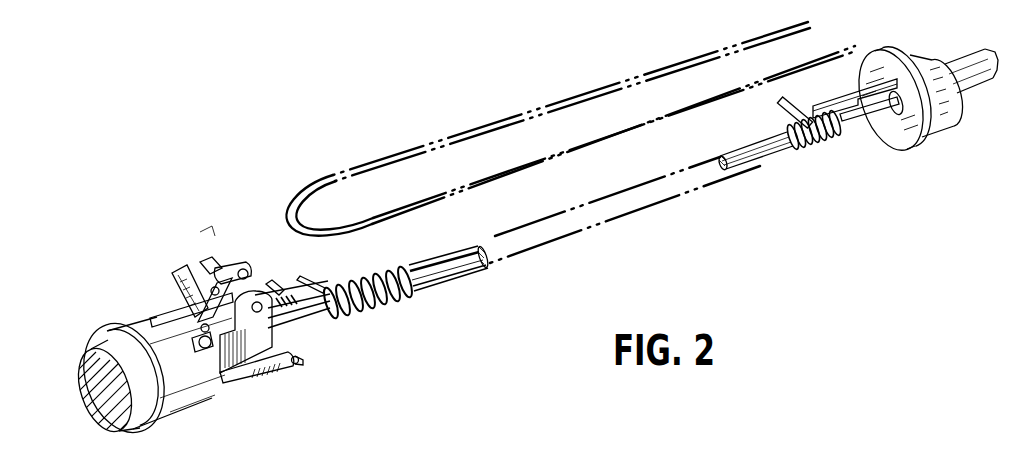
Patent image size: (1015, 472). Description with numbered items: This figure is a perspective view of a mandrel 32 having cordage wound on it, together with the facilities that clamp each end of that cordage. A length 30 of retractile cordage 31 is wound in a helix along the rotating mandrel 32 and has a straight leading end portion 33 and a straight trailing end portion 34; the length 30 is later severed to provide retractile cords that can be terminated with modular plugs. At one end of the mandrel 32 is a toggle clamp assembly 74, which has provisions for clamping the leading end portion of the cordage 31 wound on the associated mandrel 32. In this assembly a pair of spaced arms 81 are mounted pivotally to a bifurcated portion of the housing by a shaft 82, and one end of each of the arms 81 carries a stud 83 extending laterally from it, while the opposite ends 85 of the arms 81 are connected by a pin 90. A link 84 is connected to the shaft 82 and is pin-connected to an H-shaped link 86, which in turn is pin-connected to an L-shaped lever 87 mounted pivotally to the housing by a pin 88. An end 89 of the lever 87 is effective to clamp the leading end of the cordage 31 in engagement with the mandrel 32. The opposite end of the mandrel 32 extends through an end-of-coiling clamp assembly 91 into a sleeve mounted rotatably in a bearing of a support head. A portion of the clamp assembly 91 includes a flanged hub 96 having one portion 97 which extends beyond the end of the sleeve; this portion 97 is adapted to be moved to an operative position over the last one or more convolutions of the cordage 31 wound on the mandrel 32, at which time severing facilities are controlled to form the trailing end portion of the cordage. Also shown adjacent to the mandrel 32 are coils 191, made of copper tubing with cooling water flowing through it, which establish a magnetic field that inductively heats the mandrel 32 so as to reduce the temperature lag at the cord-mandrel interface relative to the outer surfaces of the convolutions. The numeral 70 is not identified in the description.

The length of retractile cordage 30 is at (382, 302).
The retractile cordage 31 is at (365, 308).
The mandrel 32 is at (753, 157).
The straight leading end portion 33 is at (292, 280).
The straight trailing end portion 34 is at (782, 110).
The handle 70 is at (152, 316).
The toggle clamp assembly 74 is at (207, 230).
The spaced arms 81 is at (238, 380).
The shaft 82 is at (208, 380).
The stud 83 is at (302, 360).
The link 84 is at (170, 300).
The opposite ends of the arms 85 is at (166, 282).
The H-shaped link 86 is at (222, 270).
The L-shaped lever 87 is at (277, 282).
The pin 88 is at (257, 296).
The end of the lever 89 is at (331, 290).
The pin 90 is at (203, 262).
The end-of-coiling clamp assembly 91 is at (958, 38).
The flanged hub 96 is at (925, 142).
The portion of the flanged hub 97 is at (838, 104).
The coils 191 is at (604, 88).